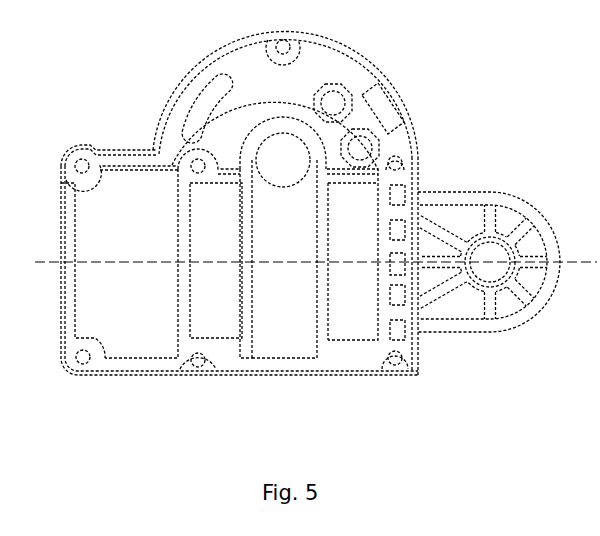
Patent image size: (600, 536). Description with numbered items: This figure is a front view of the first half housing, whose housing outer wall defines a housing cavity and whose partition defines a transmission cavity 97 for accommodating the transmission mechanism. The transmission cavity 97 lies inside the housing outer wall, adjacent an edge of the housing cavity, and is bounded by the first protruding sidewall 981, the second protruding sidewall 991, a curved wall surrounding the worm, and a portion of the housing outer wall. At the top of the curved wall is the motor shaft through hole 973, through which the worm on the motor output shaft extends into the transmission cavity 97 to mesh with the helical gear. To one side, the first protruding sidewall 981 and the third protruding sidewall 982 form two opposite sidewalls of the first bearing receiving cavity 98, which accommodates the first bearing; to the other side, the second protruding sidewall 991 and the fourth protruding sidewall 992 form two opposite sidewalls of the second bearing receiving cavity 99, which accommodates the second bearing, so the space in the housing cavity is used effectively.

The transmission cavity 97 is at (295, 312).
The motor shaft through hole 973 is at (283, 155).
The first bearing receiving cavity 98 is at (208, 218).
The first protruding sidewall 981 is at (248, 305).
The third protruding sidewall 982 is at (185, 303).
The second bearing receiving cavity 99 is at (355, 222).
The second protruding sidewall 991 is at (320, 307).
The fourth protruding sidewall 992 is at (382, 310).